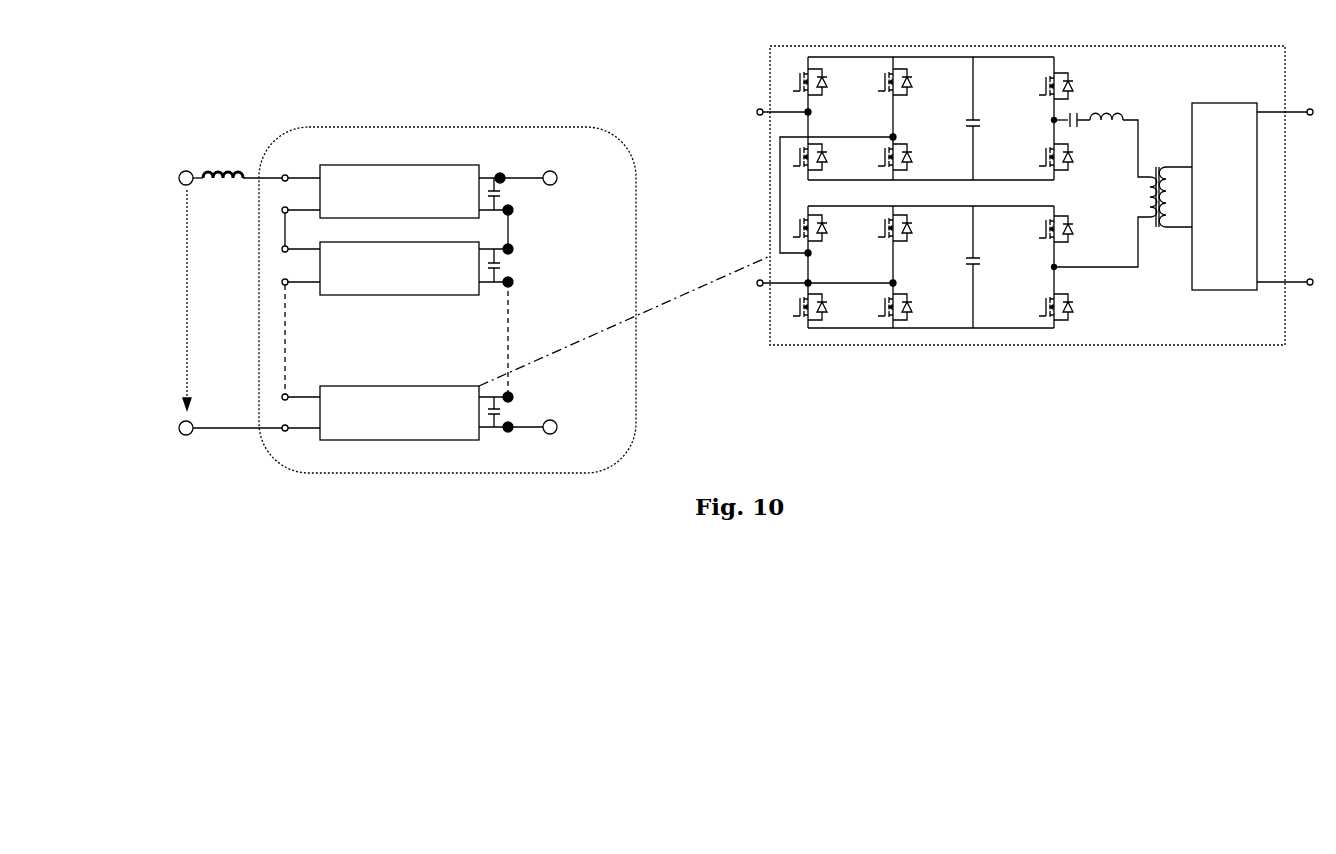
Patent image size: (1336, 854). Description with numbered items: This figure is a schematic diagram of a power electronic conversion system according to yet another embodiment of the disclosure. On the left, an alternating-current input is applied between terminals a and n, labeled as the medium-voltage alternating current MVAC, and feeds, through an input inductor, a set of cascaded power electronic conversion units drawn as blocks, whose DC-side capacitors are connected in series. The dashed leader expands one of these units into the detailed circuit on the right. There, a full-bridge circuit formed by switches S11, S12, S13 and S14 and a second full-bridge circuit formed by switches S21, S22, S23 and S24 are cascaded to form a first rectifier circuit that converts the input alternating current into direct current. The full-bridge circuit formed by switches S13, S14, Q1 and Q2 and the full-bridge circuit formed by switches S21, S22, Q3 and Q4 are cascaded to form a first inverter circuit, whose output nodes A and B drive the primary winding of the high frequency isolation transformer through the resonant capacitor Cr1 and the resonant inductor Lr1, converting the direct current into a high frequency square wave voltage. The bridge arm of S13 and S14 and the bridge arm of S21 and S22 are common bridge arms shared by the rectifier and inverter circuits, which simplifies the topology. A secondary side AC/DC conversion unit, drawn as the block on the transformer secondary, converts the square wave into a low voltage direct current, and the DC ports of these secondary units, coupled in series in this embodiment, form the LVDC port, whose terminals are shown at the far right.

The AC input terminal a is at (216, 179).
The AC neutral terminal n is at (221, 415).
The medium voltage AC MVAC is at (210, 300).
The LVDC port LVDC is at (796, 187).
The switch S11 is at (800, 82).
The switch S12 is at (823, 157).
The switch S13 is at (882, 82).
The switch S14 is at (883, 157).
The switch S21 is at (818, 239).
The switch S22 is at (799, 307).
The switch S23 is at (889, 238).
The switch S24 is at (884, 307).
The switch Q1 is at (1044, 86).
The switch Q2 is at (1044, 157).
The switch Q3 is at (1044, 229).
The switch Q4 is at (1044, 307).
The node A is at (1051, 120).
The node B is at (1093, 246).
The resonant capacitor Cr1 is at (1082, 129).
The resonant inductor Lr1 is at (1120, 145).